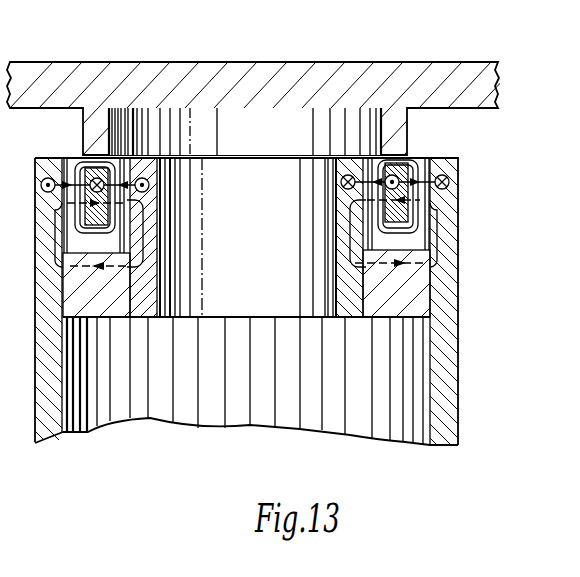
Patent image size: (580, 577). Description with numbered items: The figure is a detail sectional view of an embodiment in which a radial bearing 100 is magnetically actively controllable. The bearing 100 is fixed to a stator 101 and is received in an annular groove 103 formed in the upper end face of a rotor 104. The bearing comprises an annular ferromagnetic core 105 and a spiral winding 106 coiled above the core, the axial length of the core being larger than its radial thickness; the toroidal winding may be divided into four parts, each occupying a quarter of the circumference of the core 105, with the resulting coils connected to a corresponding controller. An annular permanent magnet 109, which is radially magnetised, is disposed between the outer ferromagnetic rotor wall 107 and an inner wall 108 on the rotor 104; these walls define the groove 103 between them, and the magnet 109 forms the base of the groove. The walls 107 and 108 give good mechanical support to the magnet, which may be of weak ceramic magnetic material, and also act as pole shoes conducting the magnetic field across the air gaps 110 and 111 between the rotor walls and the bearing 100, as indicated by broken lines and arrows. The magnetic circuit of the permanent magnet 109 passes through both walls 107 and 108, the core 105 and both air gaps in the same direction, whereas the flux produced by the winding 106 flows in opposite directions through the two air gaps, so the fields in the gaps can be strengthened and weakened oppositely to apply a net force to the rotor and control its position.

The radial bearing 100 is at (420, 147).
The stator 101 is at (435, 82).
The annular groove 103 is at (410, 197).
The rotor 104 is at (445, 395).
The annular ferromagnetic core 105 is at (397, 186).
The spiral winding 106 is at (413, 170).
The outer ferromagnetic rotor wall 107 is at (443, 297).
The inner wall 108 is at (343, 302).
The annular permanent magnet 109 is at (380, 305).
The air gap 110 is at (372, 156).
The air gap 111 is at (413, 238).